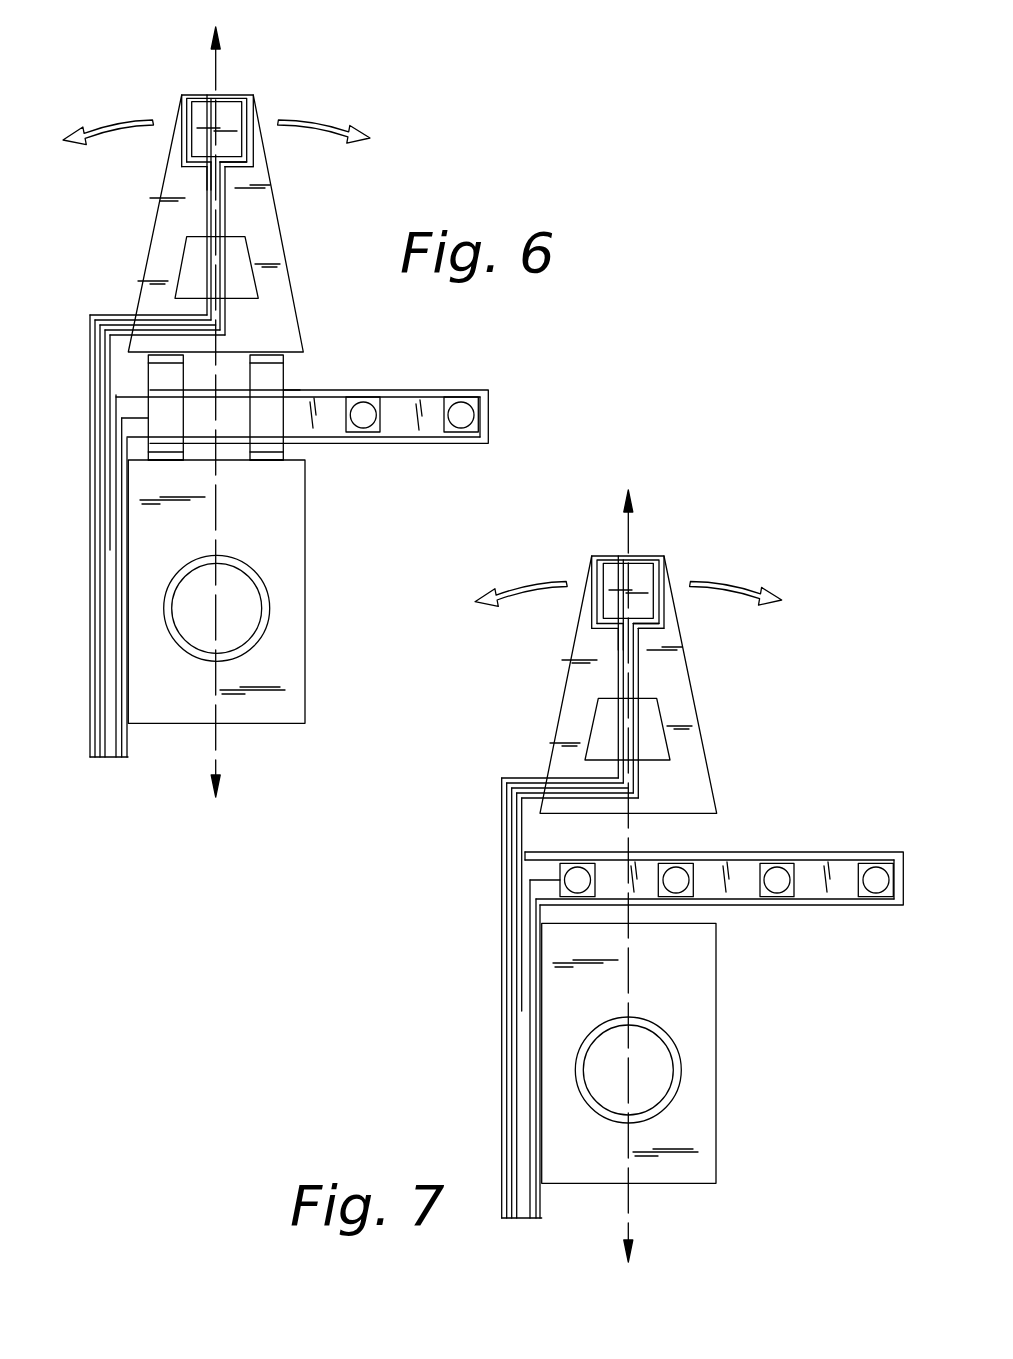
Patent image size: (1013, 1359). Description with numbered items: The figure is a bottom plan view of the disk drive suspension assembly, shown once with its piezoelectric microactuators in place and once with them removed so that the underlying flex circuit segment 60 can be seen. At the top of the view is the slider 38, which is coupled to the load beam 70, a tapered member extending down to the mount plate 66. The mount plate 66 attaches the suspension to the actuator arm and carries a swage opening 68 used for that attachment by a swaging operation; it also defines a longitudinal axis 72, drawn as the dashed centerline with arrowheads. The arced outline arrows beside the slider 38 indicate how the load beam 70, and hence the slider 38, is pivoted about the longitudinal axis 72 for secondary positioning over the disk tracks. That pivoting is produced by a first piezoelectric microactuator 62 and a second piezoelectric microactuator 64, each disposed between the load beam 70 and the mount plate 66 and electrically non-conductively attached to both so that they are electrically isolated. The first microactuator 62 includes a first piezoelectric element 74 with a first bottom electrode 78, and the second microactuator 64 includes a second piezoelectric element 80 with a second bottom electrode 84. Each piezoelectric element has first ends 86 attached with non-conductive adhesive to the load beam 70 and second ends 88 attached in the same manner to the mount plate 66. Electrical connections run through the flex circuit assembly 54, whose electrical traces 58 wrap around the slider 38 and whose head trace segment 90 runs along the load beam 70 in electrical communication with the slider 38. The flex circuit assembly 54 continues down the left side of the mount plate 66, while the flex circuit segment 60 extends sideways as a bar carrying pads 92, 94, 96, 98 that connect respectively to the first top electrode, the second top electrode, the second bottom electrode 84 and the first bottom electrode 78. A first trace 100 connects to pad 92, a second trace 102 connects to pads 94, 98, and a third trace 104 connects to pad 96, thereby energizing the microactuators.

In FIG. 6, the slider 38 is at (231, 106).
In FIG. 7, the slider 38 is at (642, 567).
In FIG. 6, the flex circuit assembly 54 is at (90, 648).
In FIG. 7, the flex circuit assembly 54 is at (501, 1110).
In FIG. 6, the electrical traces 58 is at (182, 102).
In FIG. 7, the electrical traces 58 is at (593, 563).
In FIG. 6, the flex circuit segment 60 is at (478, 390).
In FIG. 7, the flex circuit segment 60 is at (893, 852).
In FIG. 6, the first piezoelectric microactuator 62 is at (158, 370).
In FIG. 6, the second piezoelectric microactuator 64 is at (273, 368).
In FIG. 6, the mount plate 66 is at (278, 544).
In FIG. 7, the mount plate 66 is at (691, 1006).
In FIG. 6, the swage opening 68 is at (250, 587).
In FIG. 7, the swage opening 68 is at (662, 1050).
In FIG. 6, the load beam 70 is at (152, 232).
In FIG. 7, the load beam 70 is at (565, 692).
In FIG. 6, the longitudinal axis 72 is at (213, 80).
In FIG. 7, the longitudinal axis 72 is at (625, 541).
In FIG. 6, the first piezoelectric element 74 is at (177, 358).
In FIG. 6, the first bottom electrode 78 is at (160, 380).
In FIG. 6, the second piezoelectric element 80 is at (273, 358).
In FIG. 6, the second bottom electrode 84 is at (273, 378).
In FIG. 6, the first ends 86 is at (160, 358).
In FIG. 6, the second ends 88 is at (162, 461).
In FIG. 6, the head trace segment 90 is at (227, 210).
In FIG. 7, the head trace segment 90 is at (639, 672).
In FIG. 7, the pad 92 is at (577, 872).
In FIG. 7, the pad 94 is at (676, 872).
In FIG. 6, the pad 96 is at (363, 421).
In FIG. 7, the pad 96 is at (777, 886).
In FIG. 6, the pad 98 is at (461, 421).
In FIG. 7, the pad 98 is at (876, 886).
In FIG. 6, the first trace 100 is at (131, 418).
In FIG. 7, the first trace 100 is at (531, 880).
In FIG. 6, the second trace 102 is at (412, 438).
In FIG. 7, the second trace 102 is at (822, 900).
In FIG. 6, the third trace 104 is at (329, 393).
In FIG. 7, the third trace 104 is at (740, 853).